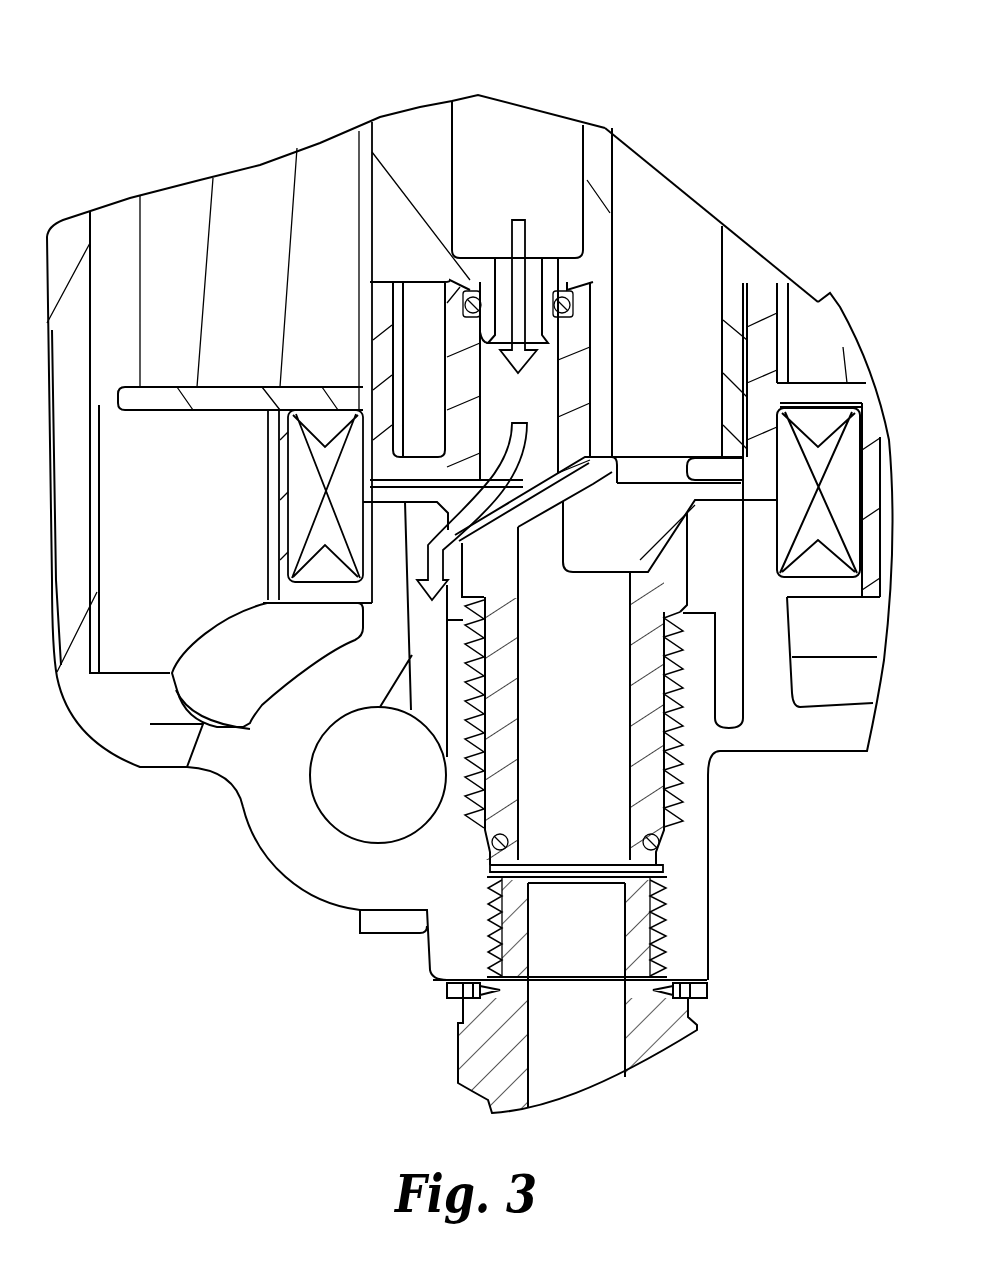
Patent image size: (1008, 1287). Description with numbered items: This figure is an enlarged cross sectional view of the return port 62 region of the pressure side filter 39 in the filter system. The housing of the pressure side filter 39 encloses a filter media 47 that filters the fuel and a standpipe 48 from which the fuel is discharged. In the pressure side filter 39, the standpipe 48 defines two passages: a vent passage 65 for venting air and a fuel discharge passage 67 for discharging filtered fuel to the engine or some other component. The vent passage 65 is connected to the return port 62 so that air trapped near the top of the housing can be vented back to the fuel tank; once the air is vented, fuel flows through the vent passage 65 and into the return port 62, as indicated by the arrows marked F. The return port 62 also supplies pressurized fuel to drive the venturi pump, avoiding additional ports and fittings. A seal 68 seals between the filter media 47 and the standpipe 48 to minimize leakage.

The pressure side filter 39 is at (840, 327).
The filter media 47 is at (170, 233).
The standpipe 48 is at (607, 172).
The return port 62 is at (377, 812).
The vent passage 65 is at (482, 132).
The fuel discharge passage 67 is at (692, 223).
The seal 68 is at (313, 500).